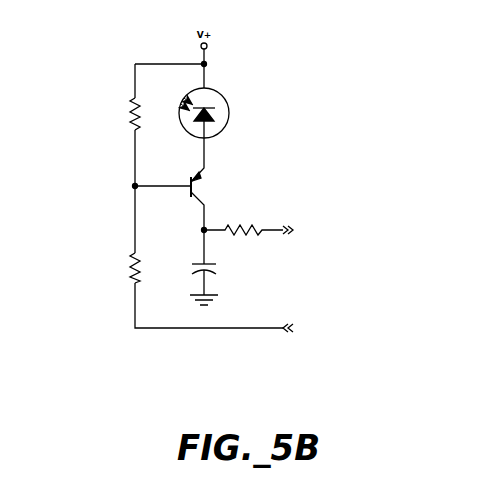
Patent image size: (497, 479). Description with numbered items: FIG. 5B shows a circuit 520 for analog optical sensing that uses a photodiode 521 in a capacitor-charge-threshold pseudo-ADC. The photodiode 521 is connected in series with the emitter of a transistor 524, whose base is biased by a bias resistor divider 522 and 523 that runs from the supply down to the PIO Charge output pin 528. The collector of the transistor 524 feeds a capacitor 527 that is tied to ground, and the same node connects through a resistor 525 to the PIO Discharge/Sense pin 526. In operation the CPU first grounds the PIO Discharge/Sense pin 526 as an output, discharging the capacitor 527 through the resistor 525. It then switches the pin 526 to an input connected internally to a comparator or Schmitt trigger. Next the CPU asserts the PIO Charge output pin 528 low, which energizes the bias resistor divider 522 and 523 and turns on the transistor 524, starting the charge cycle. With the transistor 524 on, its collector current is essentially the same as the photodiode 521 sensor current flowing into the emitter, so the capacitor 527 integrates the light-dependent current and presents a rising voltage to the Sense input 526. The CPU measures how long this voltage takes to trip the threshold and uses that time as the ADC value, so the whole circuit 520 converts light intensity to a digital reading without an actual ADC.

The circuit 520 is at (173, 389).
The photodiode 521 is at (242, 113).
The bias resistor divider 522 is at (118, 113).
The bias resistor divider 523 is at (118, 285).
The transistor 524 is at (177, 202).
The resistor 525 is at (258, 231).
The PIO Discharge/Sense pin 526 is at (318, 222).
The capacitor 527 is at (254, 275).
The PIO Charge output pin 528 is at (301, 318).